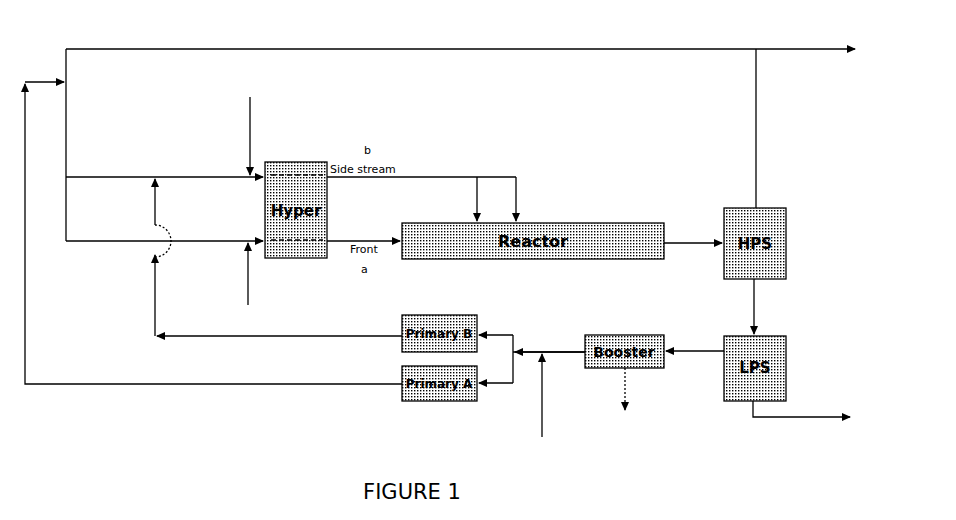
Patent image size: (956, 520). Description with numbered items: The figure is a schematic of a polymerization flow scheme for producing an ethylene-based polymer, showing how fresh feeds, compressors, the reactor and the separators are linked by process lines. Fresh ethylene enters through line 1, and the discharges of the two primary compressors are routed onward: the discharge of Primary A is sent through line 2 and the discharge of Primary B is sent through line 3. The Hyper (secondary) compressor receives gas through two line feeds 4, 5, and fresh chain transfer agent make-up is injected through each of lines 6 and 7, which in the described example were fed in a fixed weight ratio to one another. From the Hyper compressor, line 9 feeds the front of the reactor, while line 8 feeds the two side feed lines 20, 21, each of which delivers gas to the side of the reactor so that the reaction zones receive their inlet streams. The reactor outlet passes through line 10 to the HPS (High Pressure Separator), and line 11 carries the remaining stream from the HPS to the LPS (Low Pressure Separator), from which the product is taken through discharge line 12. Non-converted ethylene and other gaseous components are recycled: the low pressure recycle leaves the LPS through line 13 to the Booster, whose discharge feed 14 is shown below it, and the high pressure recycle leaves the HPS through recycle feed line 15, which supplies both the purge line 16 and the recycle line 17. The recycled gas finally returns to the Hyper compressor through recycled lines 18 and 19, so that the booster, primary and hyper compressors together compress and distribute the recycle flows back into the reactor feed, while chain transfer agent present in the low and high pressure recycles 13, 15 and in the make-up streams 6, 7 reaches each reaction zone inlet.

The fresh ethylene feed line 1 is at (553, 395).
The Primary A discharge line 2 is at (213, 233).
The Primary B discharge line 3 is at (278, 257).
The Hyper compressor feed line 4 is at (164, 162).
The Hyper compressor feed line 5 is at (164, 227).
The fresh CTA feed line 6 is at (264, 136).
The fresh CTA feed line 7 is at (261, 274).
The side stream feed line 8 is at (421, 162).
The reactor front feed line 9 is at (363, 225).
The reactor outlet line 10 is at (693, 228).
The HPS to LPS line 11 is at (770, 306).
The LPS discharge line 12 is at (801, 424).
The LPS to Booster line 13 is at (619, 335).
The Booster discharge feed 14 is at (641, 395).
The HPS recycle feed line 15 is at (771, 128).
The purge line 16 is at (805, 36).
The recycle line 17 is at (411, 33).
The recycled line to Hyper compressor 18 is at (82, 113).
The recycled line to Hyper compressor 19 is at (84, 209).
The reactor side feed line 20 is at (457, 199).
The reactor side feed line 21 is at (532, 199).